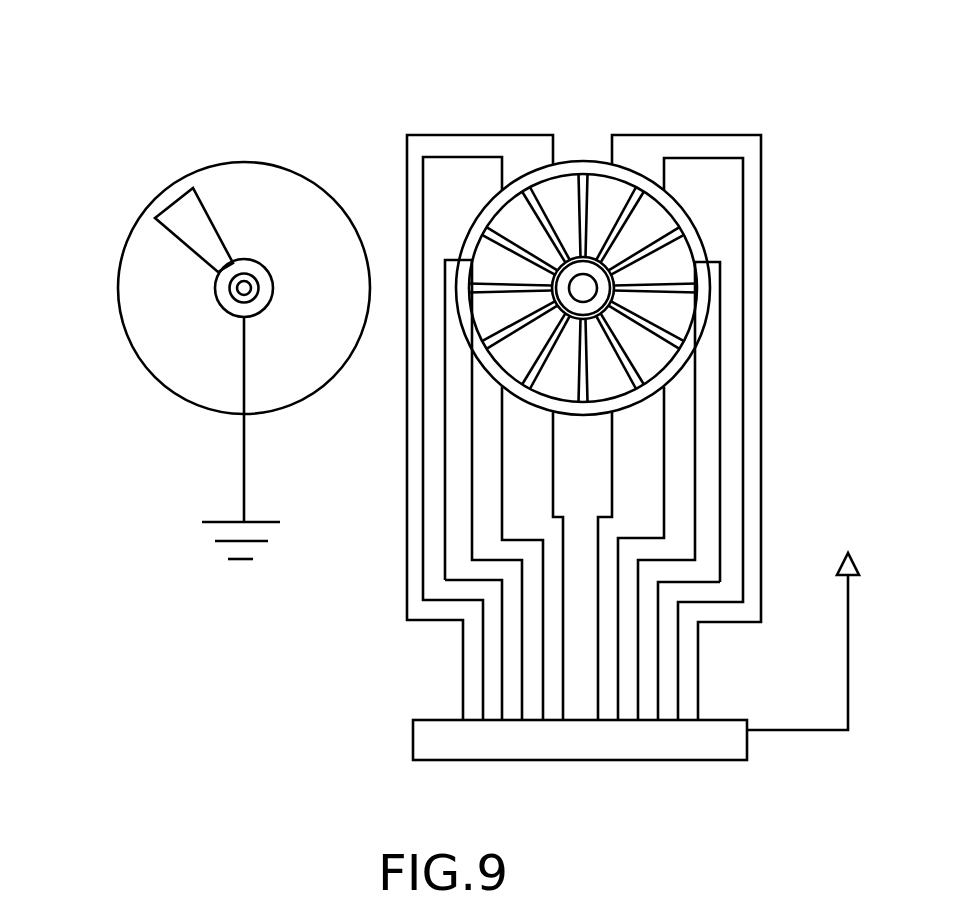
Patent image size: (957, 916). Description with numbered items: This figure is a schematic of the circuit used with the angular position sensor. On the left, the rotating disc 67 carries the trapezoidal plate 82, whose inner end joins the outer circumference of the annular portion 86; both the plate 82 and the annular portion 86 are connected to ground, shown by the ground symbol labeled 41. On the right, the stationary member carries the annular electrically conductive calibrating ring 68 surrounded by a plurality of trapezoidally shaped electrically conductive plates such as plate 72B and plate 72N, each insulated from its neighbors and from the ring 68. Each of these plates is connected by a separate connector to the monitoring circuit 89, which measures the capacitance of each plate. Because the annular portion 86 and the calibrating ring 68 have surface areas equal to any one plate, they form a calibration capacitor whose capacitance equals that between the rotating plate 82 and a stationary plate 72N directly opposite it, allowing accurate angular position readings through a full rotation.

The rotating disc 67 is at (267, 185).
The trapezoidal plate 82 is at (172, 235).
The annular portion 86 is at (217, 300).
The ground connection 41 is at (215, 522).
The calibrating ring 68 is at (603, 282).
The electrically conductive plate 72B is at (637, 237).
The electrically conductive plate 72N is at (688, 275).
The monitoring circuit 89 is at (633, 447).